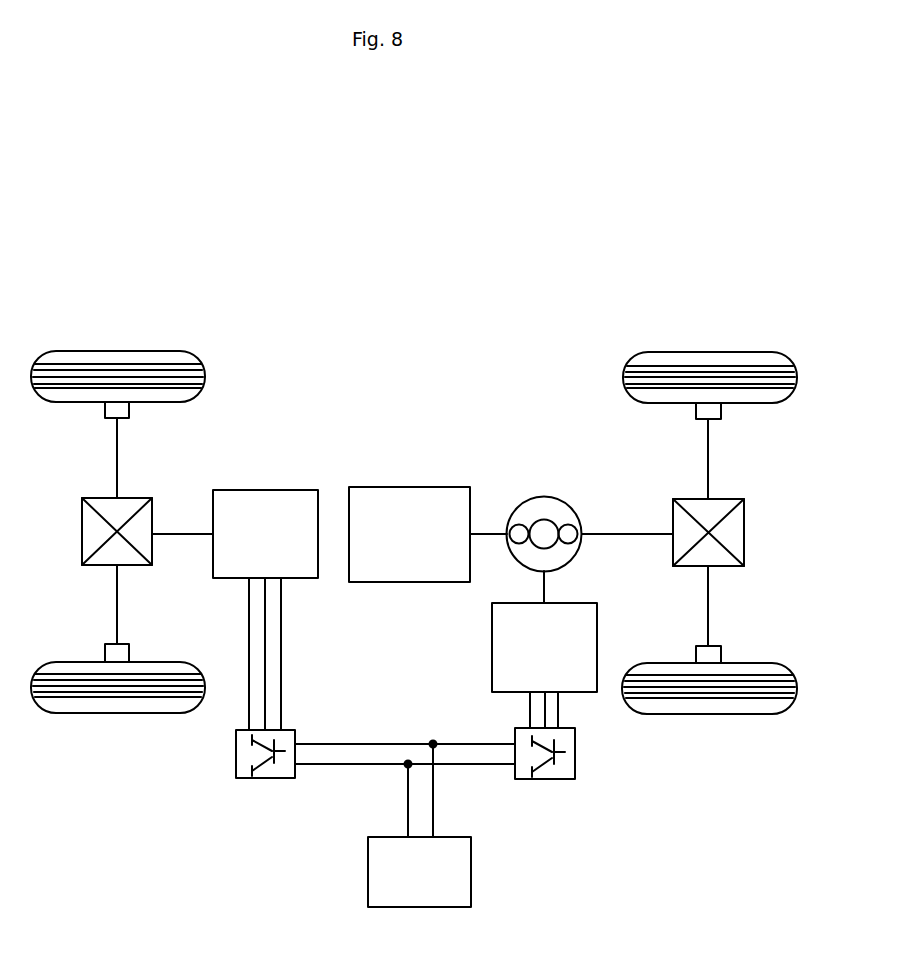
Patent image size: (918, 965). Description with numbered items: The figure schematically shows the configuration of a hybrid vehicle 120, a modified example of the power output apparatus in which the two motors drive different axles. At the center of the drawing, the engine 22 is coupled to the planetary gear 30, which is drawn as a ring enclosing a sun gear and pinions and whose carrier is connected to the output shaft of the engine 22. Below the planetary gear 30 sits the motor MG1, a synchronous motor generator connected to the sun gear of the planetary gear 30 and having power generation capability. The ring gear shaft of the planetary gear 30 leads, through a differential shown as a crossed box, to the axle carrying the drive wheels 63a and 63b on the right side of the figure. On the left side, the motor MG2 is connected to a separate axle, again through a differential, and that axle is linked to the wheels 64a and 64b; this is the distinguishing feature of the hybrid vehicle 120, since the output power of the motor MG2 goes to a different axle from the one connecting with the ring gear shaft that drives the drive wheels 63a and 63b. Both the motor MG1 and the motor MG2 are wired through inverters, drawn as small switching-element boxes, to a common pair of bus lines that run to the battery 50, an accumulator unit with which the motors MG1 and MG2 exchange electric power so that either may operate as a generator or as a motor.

The hybrid vehicle 120 is at (451, 320).
The engine 22 is at (410, 487).
The planetary gear 30 is at (547, 496).
The motor MG1 is at (492, 647).
The motor MG2 is at (263, 490).
The battery 50 is at (471, 870).
The drive wheel 63a is at (708, 352).
The drive wheel 63b is at (710, 715).
The wheel 64a is at (118, 351).
The wheel 64b is at (118, 713).